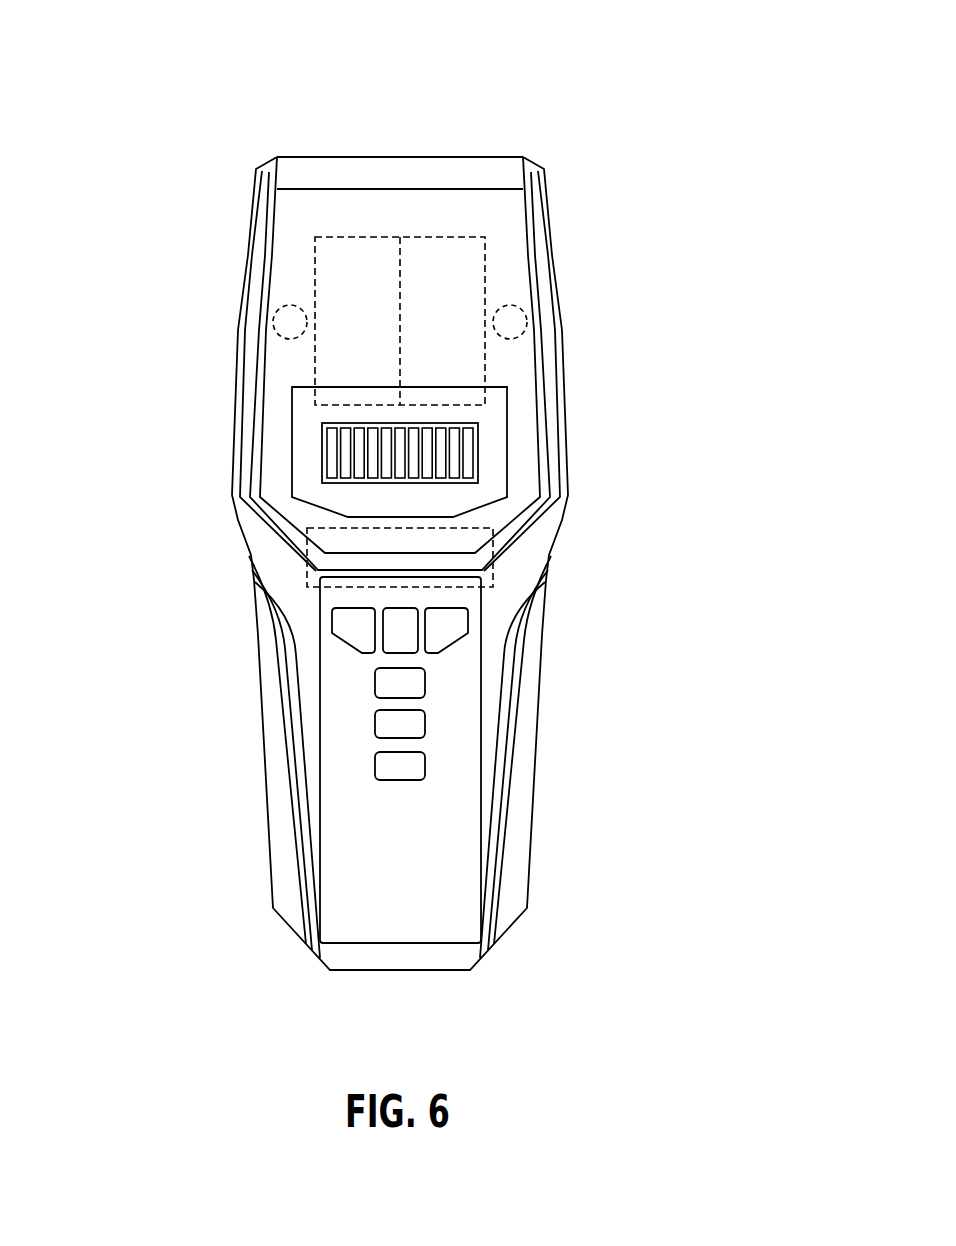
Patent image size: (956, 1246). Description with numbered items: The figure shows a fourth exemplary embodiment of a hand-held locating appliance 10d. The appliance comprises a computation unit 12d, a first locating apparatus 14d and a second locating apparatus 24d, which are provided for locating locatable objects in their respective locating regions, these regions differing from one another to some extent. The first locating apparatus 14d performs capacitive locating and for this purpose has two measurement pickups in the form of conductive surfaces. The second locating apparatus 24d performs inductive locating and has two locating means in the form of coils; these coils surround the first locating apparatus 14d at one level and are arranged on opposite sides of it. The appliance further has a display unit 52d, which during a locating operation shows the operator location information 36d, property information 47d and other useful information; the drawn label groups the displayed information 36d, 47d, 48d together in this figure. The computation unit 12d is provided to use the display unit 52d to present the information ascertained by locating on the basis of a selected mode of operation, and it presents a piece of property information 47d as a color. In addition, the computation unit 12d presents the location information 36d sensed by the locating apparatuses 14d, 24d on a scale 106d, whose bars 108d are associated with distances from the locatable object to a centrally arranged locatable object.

The hand-held locating appliance 10d is at (546, 121).
The first locating apparatus 14d is at (330, 265).
The second locating apparatus 24d is at (283, 331).
The location information 36d is at (352, 450).
The property information 47d is at (352, 450).
The output unit 48d is at (352, 450).
The scale 106d is at (318, 478).
The bars 108d is at (470, 442).
The display unit 52d is at (492, 478).
The computation unit 12d is at (477, 535).